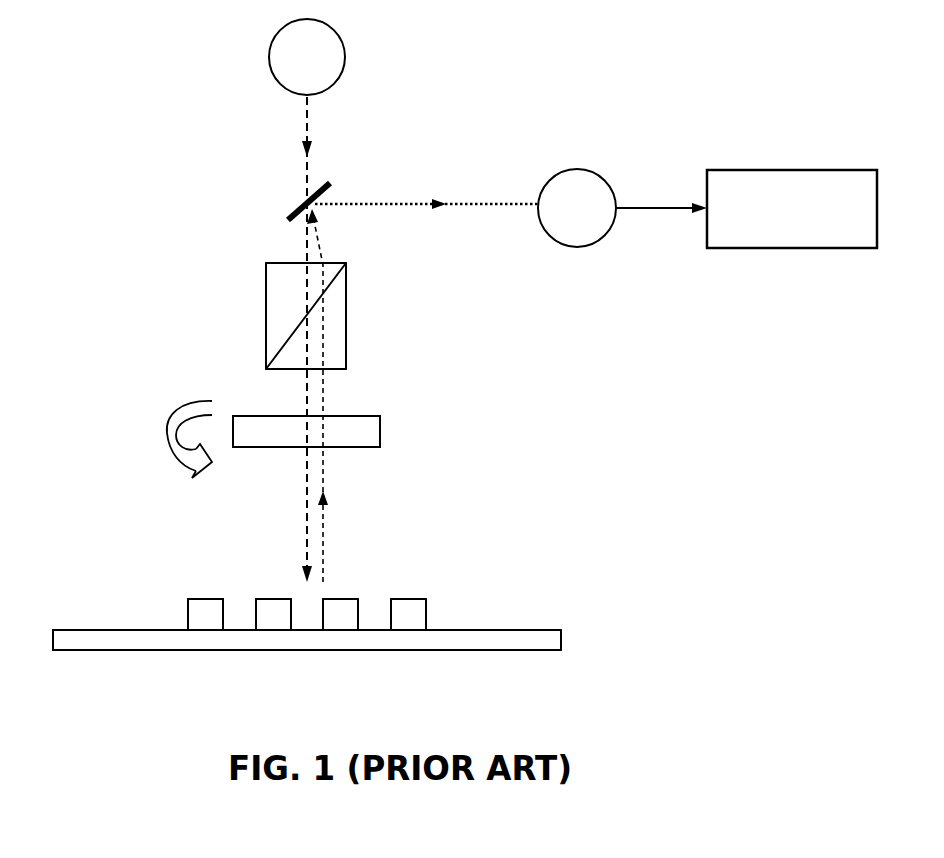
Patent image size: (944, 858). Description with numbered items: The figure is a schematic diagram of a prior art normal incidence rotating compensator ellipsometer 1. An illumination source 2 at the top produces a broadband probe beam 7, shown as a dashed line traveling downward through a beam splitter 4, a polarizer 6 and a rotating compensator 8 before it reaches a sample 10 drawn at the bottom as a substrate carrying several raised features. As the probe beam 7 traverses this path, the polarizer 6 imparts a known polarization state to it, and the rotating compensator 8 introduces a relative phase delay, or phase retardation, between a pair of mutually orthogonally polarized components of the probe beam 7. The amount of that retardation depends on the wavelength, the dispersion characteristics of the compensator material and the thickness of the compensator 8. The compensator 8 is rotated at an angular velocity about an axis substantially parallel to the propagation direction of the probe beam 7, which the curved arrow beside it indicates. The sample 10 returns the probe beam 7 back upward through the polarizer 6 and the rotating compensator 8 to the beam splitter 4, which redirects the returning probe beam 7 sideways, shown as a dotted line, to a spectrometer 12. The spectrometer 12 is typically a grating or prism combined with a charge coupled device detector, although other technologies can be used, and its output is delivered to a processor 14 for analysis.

The normal incidence ellipsometer 1 is at (701, 468).
The illumination source 2 is at (347, 62).
The beam splitter 4 is at (302, 202).
The polarizer 6 is at (266, 307).
The broadband probe beam 7 is at (307, 133).
The rotating compensator 8 is at (380, 432).
The sample 10 is at (85, 630).
The spectrometer 12 is at (577, 247).
The processor 14 is at (773, 237).